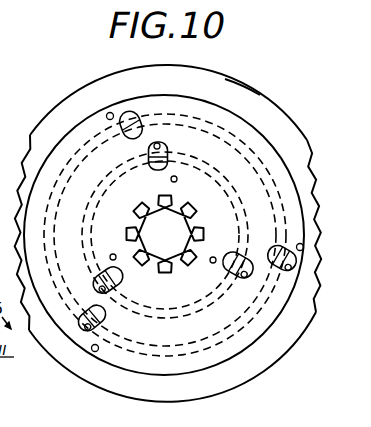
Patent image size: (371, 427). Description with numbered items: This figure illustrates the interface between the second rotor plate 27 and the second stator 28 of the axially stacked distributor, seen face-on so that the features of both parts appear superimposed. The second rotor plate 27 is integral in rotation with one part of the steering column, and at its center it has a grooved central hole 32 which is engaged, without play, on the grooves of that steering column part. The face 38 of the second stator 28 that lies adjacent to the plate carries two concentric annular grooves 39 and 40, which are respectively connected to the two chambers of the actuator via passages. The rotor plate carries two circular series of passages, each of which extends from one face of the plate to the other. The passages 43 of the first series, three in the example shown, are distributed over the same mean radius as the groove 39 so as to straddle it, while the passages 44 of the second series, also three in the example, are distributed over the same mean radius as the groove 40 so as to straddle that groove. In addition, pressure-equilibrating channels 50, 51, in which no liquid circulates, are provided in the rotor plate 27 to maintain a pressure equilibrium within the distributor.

The second rotor plate 27 is at (63, 135).
The second stator 28 is at (93, 80).
The grooved central hole 32 is at (131, 230).
The face of the second stator 38 is at (241, 88).
The annular groove 39 is at (310, 197).
The annular groove 40 is at (316, 163).
The passages of the first series 43 is at (141, 123).
The passages of the second series 44 is at (170, 153).
The pressure-balancing channel 50 is at (110, 112).
The pressure-balancing channel 51 is at (171, 180).